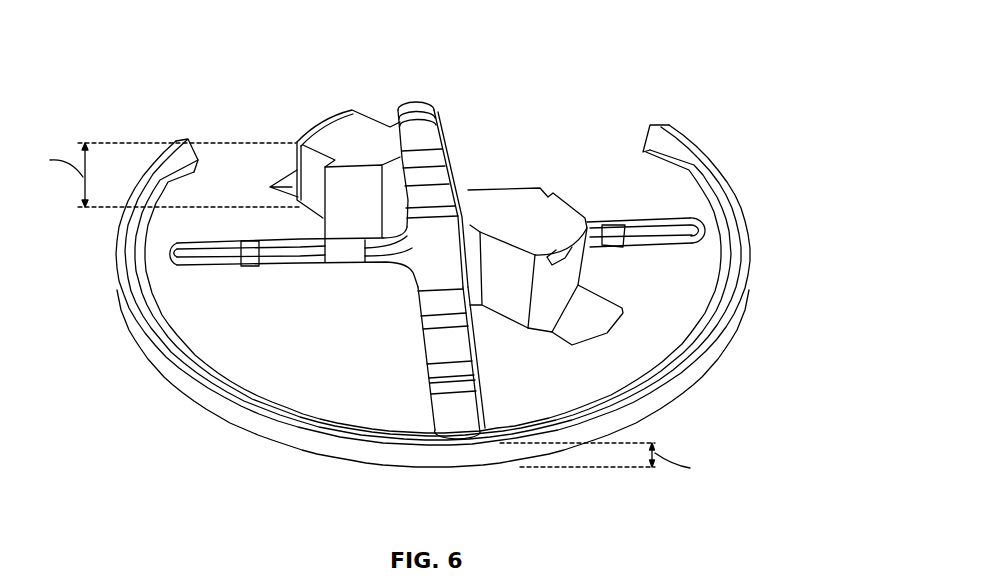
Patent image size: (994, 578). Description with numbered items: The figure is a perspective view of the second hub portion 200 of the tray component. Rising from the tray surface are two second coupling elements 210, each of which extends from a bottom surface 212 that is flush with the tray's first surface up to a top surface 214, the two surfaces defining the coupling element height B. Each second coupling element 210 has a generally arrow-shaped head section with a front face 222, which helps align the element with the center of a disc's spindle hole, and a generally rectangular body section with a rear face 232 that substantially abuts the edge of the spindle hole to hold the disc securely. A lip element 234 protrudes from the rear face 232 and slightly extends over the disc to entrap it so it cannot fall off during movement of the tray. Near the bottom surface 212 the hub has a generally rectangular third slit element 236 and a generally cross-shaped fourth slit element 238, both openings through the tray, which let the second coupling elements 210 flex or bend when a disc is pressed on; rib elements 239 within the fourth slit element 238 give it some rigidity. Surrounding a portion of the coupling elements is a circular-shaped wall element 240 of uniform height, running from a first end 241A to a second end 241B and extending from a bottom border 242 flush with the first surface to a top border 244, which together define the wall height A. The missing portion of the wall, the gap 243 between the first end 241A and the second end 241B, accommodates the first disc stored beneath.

The second hub portion 200 is at (155, 68).
The second coupling element 210 is at (548, 234).
The bottom surface 212 is at (110, 208).
The top surface 214 is at (110, 143).
The front face 222 is at (393, 178).
The rear face 232 is at (562, 277).
The lip element 234 is at (563, 245).
The third slit element 236 is at (580, 322).
The fourth slit element 238 is at (428, 252).
The rib element 239 is at (248, 258).
The wall element 240 is at (347, 448).
The first end 241A is at (200, 168).
The second end 241B is at (652, 122).
The bottom border 242 is at (598, 468).
The gap 243 is at (418, 85).
The top border 244 is at (632, 445).